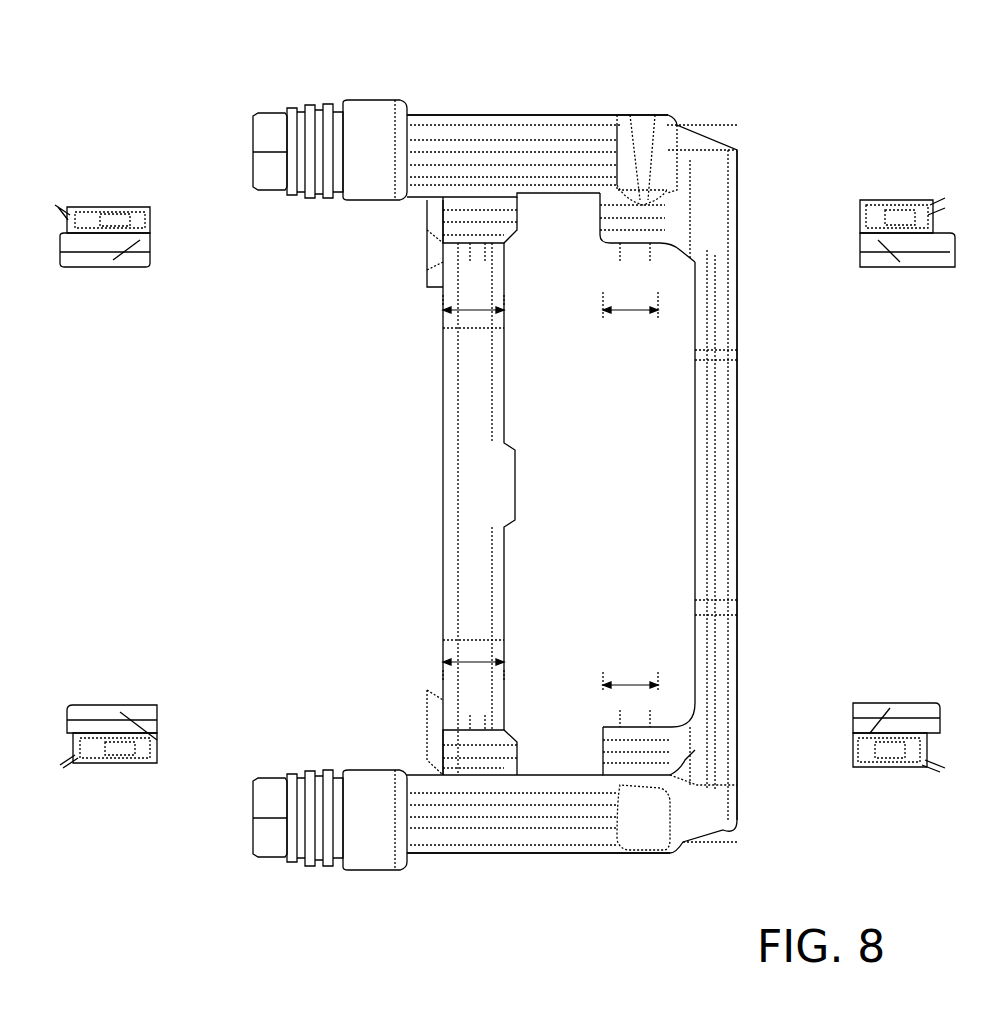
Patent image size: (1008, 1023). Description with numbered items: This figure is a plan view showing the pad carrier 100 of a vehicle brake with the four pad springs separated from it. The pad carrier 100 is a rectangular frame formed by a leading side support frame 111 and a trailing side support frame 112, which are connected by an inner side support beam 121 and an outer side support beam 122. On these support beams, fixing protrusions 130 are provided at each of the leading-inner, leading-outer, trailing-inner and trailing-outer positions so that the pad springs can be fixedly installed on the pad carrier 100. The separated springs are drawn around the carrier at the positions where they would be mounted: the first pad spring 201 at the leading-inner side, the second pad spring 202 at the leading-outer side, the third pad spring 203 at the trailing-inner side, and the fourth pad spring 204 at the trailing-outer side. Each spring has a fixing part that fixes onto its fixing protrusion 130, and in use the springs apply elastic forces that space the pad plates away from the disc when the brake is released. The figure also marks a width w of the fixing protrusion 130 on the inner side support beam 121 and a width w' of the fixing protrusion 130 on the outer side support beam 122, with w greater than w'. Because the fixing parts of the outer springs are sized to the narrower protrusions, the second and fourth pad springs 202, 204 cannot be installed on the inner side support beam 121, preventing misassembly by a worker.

The pad carrier 100 is at (123, 957).
The leading side support frame 111 is at (550, 135).
The trailing side support frame 112 is at (550, 832).
The inner side support beam 121 is at (470, 475).
The outer side support beam 122 is at (737, 465).
The fixing protrusion 130 is at (480, 215).
The first pad spring 201 is at (117, 205).
The second pad spring 202 is at (905, 210).
The third pad spring 203 is at (97, 700).
The fourth pad spring 204 is at (907, 705).